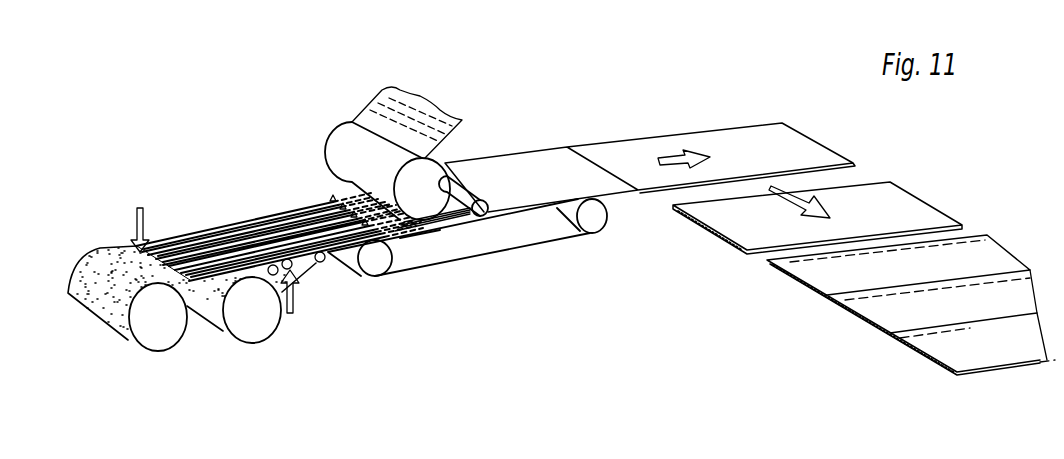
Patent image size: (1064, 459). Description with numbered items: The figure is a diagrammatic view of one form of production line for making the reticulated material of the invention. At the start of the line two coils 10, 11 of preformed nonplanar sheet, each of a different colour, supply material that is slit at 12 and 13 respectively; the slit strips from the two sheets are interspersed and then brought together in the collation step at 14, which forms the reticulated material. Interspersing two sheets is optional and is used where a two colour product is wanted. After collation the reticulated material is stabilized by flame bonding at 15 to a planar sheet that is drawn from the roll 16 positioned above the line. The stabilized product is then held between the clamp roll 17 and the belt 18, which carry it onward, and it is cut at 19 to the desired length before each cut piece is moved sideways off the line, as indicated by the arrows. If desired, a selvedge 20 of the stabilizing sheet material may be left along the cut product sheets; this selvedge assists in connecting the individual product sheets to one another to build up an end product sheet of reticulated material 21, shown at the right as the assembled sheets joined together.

The coil 10 is at (133, 349).
The coil 11 is at (228, 341).
The slitting station 12 is at (138, 211).
The slitting station 13 is at (292, 314).
The collation step 14 is at (277, 212).
The flame bonding station 15 is at (322, 197).
The roll 16 is at (378, 128).
The clamp roll 17 is at (458, 188).
The belt 18 is at (509, 248).
The cutting station 19 is at (604, 146).
The selvedge 20 is at (672, 207).
The end product sheet of reticulated material 21 is at (890, 333).